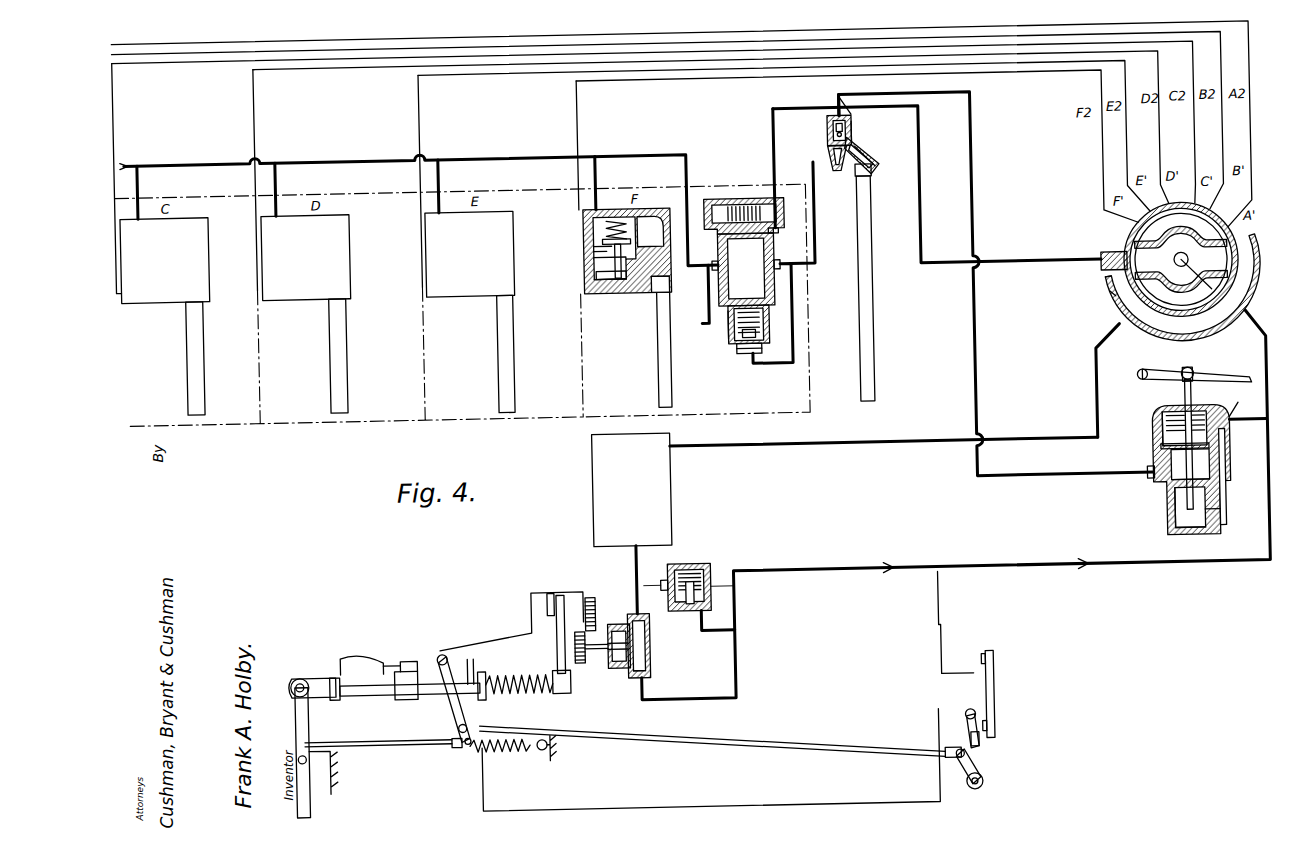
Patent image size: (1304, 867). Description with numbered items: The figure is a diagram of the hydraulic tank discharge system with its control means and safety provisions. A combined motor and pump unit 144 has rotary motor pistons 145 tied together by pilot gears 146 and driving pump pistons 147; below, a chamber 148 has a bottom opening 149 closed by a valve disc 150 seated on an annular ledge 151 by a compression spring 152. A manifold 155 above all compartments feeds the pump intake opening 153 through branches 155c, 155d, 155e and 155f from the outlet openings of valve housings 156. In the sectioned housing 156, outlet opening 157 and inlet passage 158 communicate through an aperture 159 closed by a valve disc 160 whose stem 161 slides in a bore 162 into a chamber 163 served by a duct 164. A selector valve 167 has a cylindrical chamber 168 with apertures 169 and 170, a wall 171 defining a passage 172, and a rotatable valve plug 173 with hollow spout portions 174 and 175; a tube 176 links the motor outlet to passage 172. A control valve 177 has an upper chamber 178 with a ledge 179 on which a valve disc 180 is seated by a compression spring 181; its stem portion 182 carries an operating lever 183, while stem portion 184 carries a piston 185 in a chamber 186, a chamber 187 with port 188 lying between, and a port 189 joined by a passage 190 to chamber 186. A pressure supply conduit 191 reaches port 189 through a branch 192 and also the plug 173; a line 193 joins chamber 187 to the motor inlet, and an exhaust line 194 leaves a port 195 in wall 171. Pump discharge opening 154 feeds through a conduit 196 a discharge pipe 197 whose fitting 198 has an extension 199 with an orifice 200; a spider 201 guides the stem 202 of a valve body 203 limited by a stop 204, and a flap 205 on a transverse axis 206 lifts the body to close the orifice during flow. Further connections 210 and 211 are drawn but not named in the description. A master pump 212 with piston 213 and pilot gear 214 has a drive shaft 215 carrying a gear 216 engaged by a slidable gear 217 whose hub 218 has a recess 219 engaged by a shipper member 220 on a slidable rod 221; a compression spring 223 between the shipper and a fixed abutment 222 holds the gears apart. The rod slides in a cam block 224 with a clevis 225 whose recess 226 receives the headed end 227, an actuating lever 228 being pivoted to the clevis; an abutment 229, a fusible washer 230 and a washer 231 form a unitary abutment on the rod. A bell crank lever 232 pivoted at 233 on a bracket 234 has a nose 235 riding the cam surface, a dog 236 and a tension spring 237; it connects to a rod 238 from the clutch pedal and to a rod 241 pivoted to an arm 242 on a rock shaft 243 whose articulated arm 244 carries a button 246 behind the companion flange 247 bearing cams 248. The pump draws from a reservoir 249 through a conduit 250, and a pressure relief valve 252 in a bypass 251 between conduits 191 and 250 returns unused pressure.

The combined motor and pump unit 144 is at (782, 233).
The rotary motor piston 145 is at (758, 261).
The pilot gear 146 is at (750, 205).
The pump piston 147 is at (760, 285).
The chamber 148 is at (770, 318).
The bottom opening 149 is at (748, 356).
The valve disc 150 is at (740, 350).
The annular ledge 151 is at (758, 335).
The compression spring 152 is at (730, 322).
The intake opening 153 is at (716, 270).
The discharge opening 154 is at (783, 256).
The manifold 155 is at (620, 153).
The branch 155c is at (143, 180).
The branch 155d is at (282, 171).
The branch 155e is at (444, 175).
The branch 155f is at (602, 173).
The valve housing 156 is at (158, 282).
The outlet opening 157 is at (598, 228).
The inlet passage 158 is at (672, 278).
The aperture 159 is at (597, 250).
The valve disc 160 is at (612, 253).
The stem 161 is at (610, 210).
The bore 162 is at (606, 280).
The chamber 163 is at (622, 280).
The duct 164 is at (597, 280).
The selector valve 167 is at (1178, 288).
The cylindrical chamber 168 is at (1178, 259).
The aperture 169 is at (1120, 260).
The aperture 170 is at (1210, 248).
The wall 171 is at (1185, 263).
The passage 172 is at (1118, 306).
The valve plug 173 is at (1120, 290).
The spout portion 174 is at (1160, 251).
The spout portion 175 is at (1200, 290).
The tube 176 is at (940, 272).
The control valve 177 is at (1185, 439).
The upper chamber 178 is at (1162, 436).
The ledge 179 is at (1160, 456).
The valve disc 180 is at (1206, 470).
The compression spring 181 is at (1166, 428).
The stem portion 182 is at (1188, 377).
The operating lever 183 is at (1240, 386).
The stem portion 184 is at (1170, 488).
The piston 185 is at (1173, 510).
The chamber 186 is at (1173, 535).
The chamber 187 is at (1224, 490).
The port 188 is at (1146, 484).
The port 189 is at (1246, 399).
The passage 190 is at (1220, 520).
The pressure supply conduit 191 is at (1266, 348).
The branch 192 is at (1250, 433).
The line 193 is at (978, 178).
The exhaust line 194 is at (1024, 444).
The port 195 is at (1135, 330).
The conduit 196 is at (833, 158).
The discharge pipe 197 is at (876, 262).
The fitting 198 is at (865, 156).
The upward extension 199 is at (860, 124).
The orifice 200 is at (845, 98).
The spider 201 is at (866, 152).
The stem 202 is at (838, 116).
The valve body 203 is at (858, 110).
The stop 204 is at (842, 135).
The flap 205 is at (877, 172).
The transverse axis 206 is at (818, 166).
The pipe 210 is at (790, 368).
The pipe 211 is at (691, 299).
The master pump 212 is at (642, 660).
The piston 213 is at (646, 632).
The pilot gear 214 is at (612, 622).
The drive shaft 215 is at (628, 645).
The gear 216 is at (595, 649).
The slidable gear 217 is at (588, 594).
The elongated hub 218 is at (556, 592).
The annular recess 219 is at (546, 590).
The shipper member 220 is at (538, 640).
The slidable rod 221 is at (565, 690).
The fixed abutment 222 is at (478, 696).
The compression spring 223 is at (524, 692).
The cam block 224 is at (375, 690).
The clevis 225 is at (290, 670).
The recess 226 is at (312, 670).
The headed end 227 is at (330, 694).
The actuating lever 228 is at (302, 690).
The abutment 229 is at (388, 655).
The fusible washer 230 is at (402, 694).
The washer 231 is at (438, 650).
The bell crank lever 232 is at (446, 650).
The pivot 233 is at (450, 658).
The bracket 234 is at (468, 660).
The nose 235 is at (350, 650).
The dog 236 is at (406, 655).
The tension spring 237 is at (496, 748).
The rod 238 is at (380, 740).
The rod 241 is at (690, 740).
The arm 242 is at (968, 772).
The rock shaft 243 is at (976, 785).
The articulated arm 244 is at (960, 730).
The button 246 is at (970, 716).
The front companion flange 247 is at (988, 663).
The triangularly-shaped cam 248 is at (975, 660).
The reservoir 249 is at (670, 490).
The conduit 250 is at (640, 550).
The bypass 251 is at (708, 632).
The pressure relief valve 252 is at (710, 565).